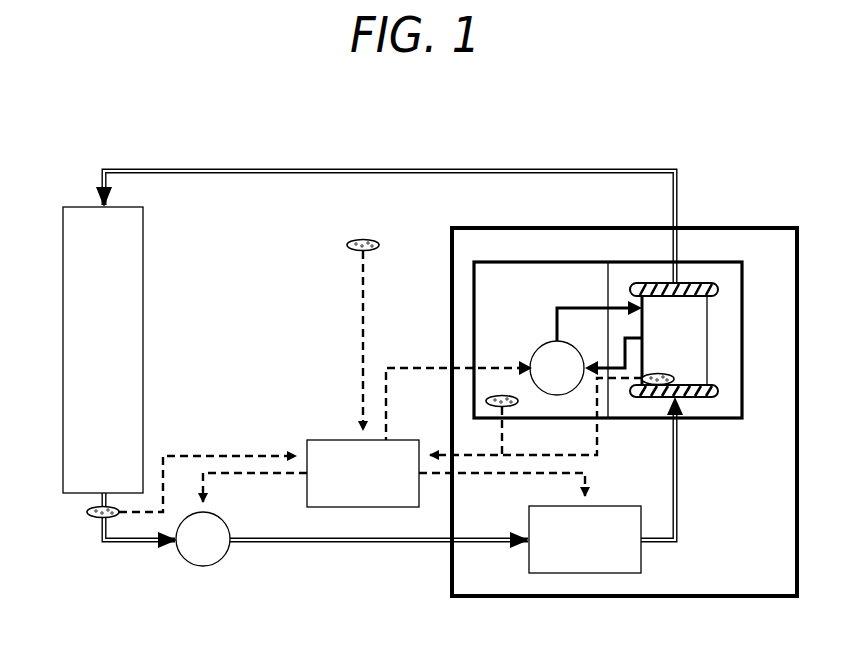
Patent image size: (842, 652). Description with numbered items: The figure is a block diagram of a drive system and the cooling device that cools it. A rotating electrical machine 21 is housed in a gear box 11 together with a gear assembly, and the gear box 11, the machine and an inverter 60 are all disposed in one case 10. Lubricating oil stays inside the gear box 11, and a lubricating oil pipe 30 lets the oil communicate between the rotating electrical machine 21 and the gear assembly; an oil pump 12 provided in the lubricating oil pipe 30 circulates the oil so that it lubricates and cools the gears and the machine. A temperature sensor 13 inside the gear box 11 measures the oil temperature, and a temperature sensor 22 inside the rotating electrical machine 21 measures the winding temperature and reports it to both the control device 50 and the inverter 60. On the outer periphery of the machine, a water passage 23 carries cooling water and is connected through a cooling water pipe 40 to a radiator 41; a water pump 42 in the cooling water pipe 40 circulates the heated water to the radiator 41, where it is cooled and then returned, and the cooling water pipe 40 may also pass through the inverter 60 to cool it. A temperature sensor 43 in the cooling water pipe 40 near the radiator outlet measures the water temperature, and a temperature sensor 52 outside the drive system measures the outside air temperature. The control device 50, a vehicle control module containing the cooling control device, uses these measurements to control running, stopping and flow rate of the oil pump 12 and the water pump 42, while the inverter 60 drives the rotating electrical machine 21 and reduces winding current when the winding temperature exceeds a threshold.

The case 10 is at (495, 597).
The gear box 11 is at (473, 285).
The oil pump 12 is at (540, 341).
The temperature sensor 13 is at (490, 400).
The rotating electrical machine 21 is at (708, 330).
The temperature sensor 22 is at (665, 372).
The water passage 23 is at (710, 283).
The lubricating oil pipe 30 is at (598, 306).
The cooling water pipe 40 is at (598, 153).
The radiator 41 is at (97, 205).
The water pump 42 is at (186, 563).
The temperature sensor 43 is at (95, 518).
The control device 50 is at (307, 440).
The temperature sensor 52 is at (360, 240).
The inverter 60 is at (575, 573).